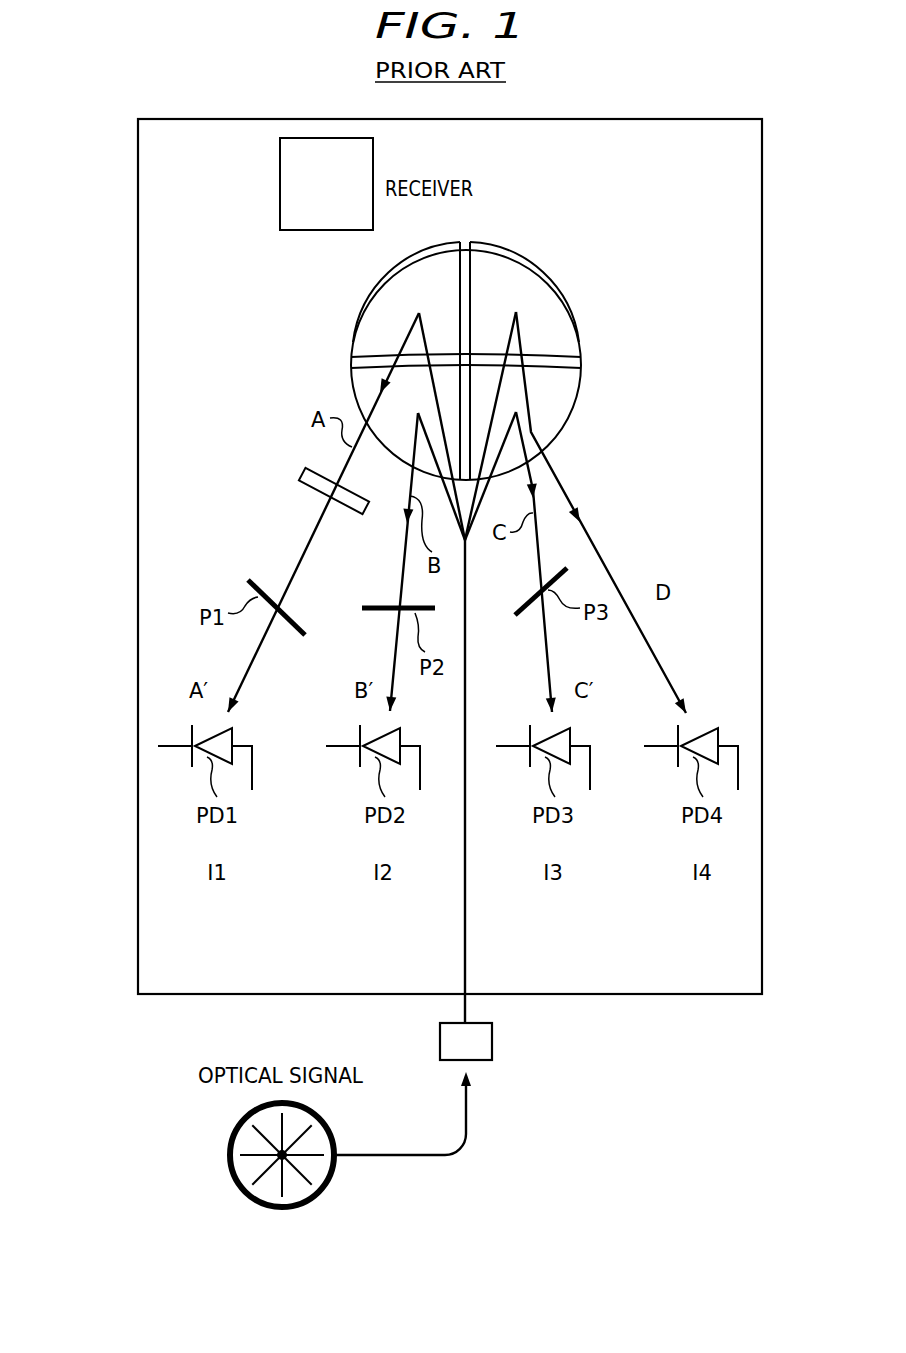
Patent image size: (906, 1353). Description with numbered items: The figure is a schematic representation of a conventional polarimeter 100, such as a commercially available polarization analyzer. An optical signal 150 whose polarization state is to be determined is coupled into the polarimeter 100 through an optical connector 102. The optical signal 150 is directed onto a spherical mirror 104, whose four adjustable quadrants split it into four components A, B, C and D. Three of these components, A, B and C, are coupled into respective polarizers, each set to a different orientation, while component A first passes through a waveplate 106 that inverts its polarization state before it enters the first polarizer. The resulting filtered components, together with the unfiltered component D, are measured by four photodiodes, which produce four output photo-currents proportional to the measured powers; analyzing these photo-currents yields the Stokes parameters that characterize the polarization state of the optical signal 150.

The polarimeter 100 is at (50, 482).
The optical connector 102 is at (492, 1040).
The spherical mirror 104 is at (540, 305).
The waveplate 106 is at (298, 478).
The optical signal 150 is at (330, 1131).